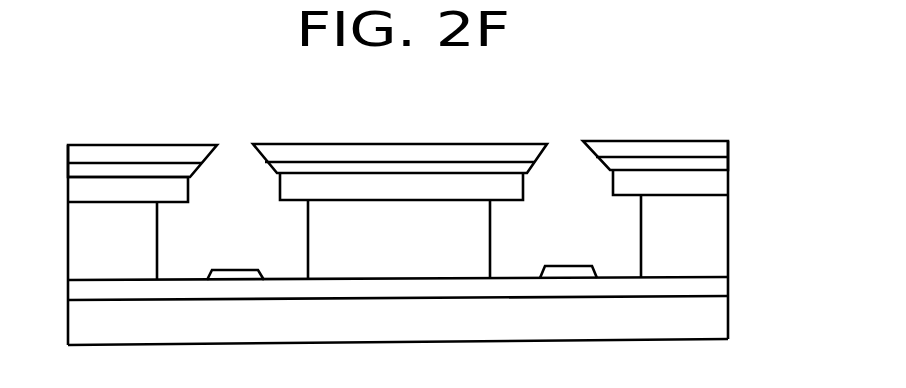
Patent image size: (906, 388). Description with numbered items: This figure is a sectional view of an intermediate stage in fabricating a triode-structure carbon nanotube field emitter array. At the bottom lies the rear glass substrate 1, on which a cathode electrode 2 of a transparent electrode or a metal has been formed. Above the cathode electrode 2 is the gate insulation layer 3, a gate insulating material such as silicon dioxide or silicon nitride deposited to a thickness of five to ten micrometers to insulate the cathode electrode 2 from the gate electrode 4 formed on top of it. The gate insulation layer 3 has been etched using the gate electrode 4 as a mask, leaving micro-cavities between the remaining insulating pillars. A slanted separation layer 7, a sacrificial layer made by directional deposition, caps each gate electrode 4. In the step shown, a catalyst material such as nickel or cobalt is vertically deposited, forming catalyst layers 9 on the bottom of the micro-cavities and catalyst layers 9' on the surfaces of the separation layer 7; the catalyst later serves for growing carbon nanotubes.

The rear glass substrate 1 is at (725, 317).
The cathode electrode 2 is at (725, 283).
The gate insulation layer 3 is at (729, 240).
The gate electrode 4 is at (723, 185).
The separation layer 7 is at (723, 163).
The catalyst layer 9 is at (402, 239).
The catalyst layer 9' is at (398, 123).